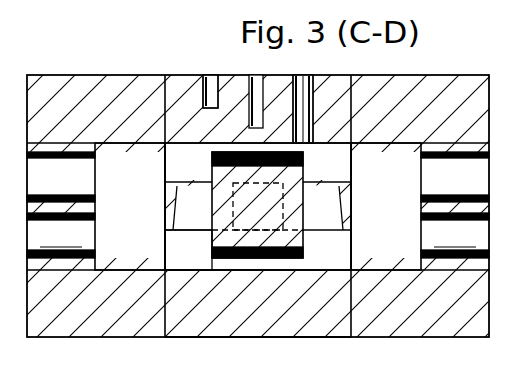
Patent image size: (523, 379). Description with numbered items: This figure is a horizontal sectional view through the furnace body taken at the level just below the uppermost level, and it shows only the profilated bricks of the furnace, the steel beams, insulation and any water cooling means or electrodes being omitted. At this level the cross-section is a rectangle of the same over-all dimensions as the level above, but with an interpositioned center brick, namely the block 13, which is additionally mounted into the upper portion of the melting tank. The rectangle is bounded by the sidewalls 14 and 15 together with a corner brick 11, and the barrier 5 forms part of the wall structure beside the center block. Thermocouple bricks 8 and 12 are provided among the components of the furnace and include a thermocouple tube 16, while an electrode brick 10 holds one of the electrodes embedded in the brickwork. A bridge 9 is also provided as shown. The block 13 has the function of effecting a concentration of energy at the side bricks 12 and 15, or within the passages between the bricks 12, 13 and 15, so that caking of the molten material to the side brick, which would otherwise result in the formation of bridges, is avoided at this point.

The barrier 5 is at (184, 219).
The thermocouple brick 8 is at (319, 175).
The bridge 9 is at (123, 193).
The electrode brick 10 is at (261, 189).
The corner brick 11 is at (101, 82).
The thermocouple brick 12 is at (181, 84).
The block 13 is at (245, 192).
The sidewall 14 is at (181, 264).
The sidewall 15 is at (328, 330).
The thermocouple tube 16 is at (291, 75).